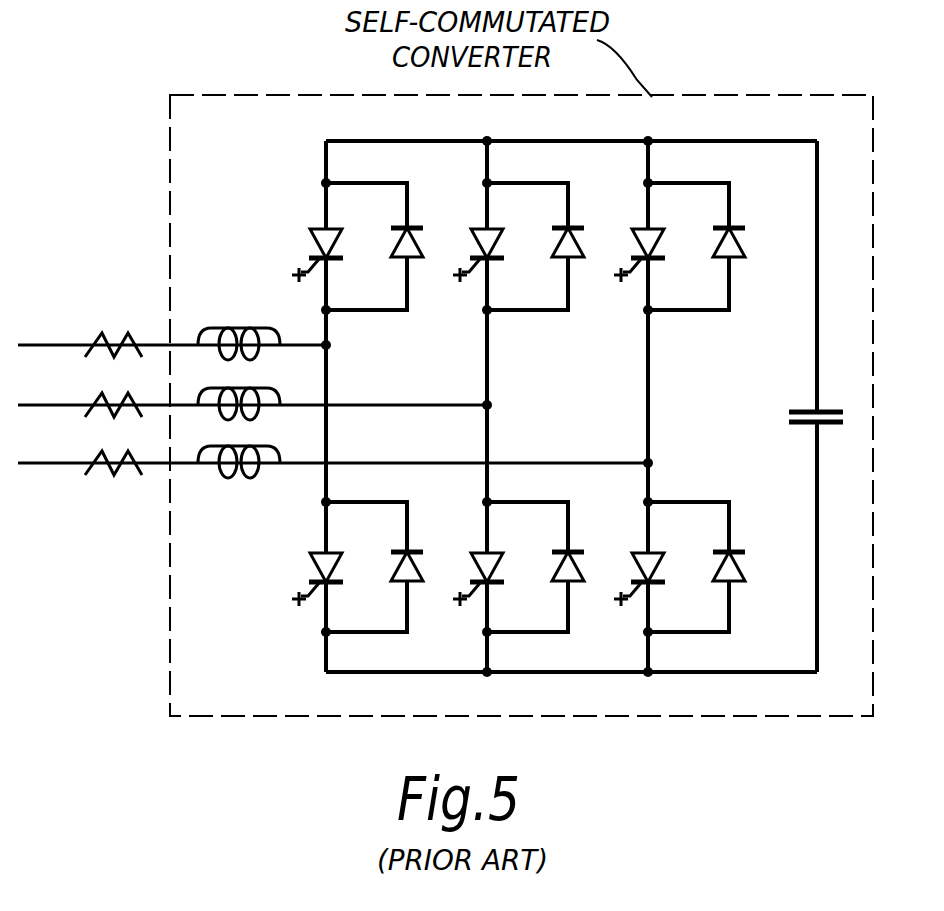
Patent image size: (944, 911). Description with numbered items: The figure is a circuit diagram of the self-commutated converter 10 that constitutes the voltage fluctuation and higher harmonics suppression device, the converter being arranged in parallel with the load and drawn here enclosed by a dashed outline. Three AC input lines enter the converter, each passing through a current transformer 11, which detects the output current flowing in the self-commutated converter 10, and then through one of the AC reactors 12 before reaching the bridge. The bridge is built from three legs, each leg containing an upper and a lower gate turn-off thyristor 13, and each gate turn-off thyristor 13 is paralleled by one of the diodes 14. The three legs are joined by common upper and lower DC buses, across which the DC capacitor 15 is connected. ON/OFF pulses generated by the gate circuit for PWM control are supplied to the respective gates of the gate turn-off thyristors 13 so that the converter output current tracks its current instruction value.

The self-commutated converter 10 is at (288, 718).
The current transformer 11 is at (135, 340).
The AC reactors 12 is at (243, 328).
The gate turn-off thyristors 13 is at (307, 252).
The diodes 14 is at (418, 240).
The DC capacitor 15 is at (808, 410).